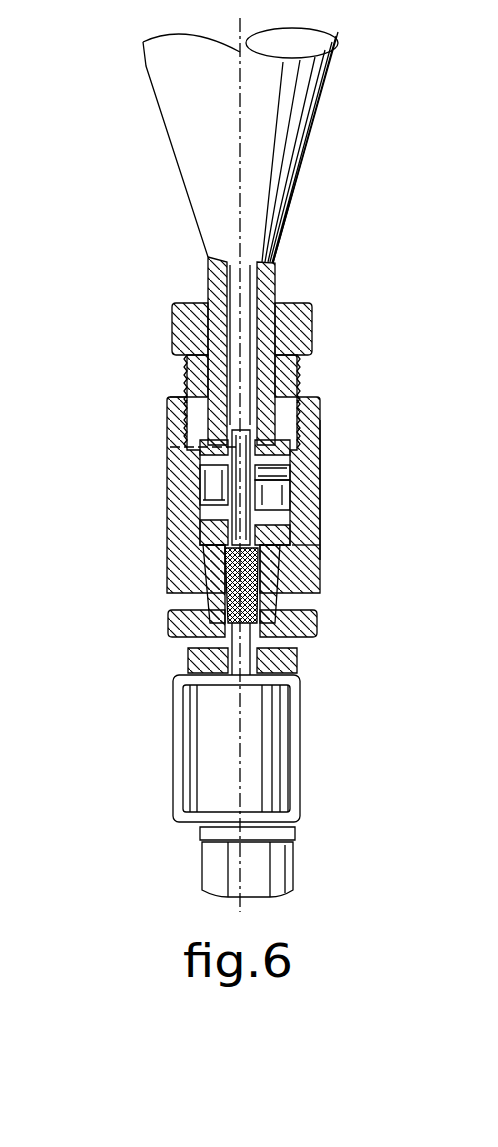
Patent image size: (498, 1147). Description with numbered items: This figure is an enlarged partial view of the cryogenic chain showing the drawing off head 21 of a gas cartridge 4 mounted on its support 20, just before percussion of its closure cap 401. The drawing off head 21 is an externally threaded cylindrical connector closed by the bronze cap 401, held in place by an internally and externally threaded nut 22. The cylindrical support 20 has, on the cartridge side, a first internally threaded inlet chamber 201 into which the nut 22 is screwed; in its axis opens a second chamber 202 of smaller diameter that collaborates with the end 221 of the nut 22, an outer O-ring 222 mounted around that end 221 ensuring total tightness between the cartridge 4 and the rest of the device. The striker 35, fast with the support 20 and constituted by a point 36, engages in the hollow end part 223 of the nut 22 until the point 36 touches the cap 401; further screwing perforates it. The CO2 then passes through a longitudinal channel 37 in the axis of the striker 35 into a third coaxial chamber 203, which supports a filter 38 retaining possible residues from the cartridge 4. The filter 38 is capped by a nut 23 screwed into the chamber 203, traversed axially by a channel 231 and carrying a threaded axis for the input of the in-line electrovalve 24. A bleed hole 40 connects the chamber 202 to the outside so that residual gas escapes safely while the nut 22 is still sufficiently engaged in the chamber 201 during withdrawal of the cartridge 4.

The cartridge 4 is at (168, 147).
The drawing off head 21 is at (277, 292).
The nut 22 is at (173, 307).
The cap 401 is at (187, 377).
The hollow end part 223 is at (200, 400).
The support 20 is at (168, 490).
The first inlet chamber 201 is at (167, 400).
The bleed hole 40 is at (170, 447).
The point 36 is at (275, 440).
The striker 35 is at (185, 530).
The O-ring 222 is at (292, 452).
The end of the nut 221 is at (292, 483).
The second chamber 202 is at (322, 512).
The longitudinal channel 37 is at (168, 572).
The third coaxial chamber 203 is at (305, 546).
The filter 38 is at (262, 602).
The nut 23 is at (170, 627).
The channel 231 is at (296, 648).
The electrovalve 24 is at (210, 742).